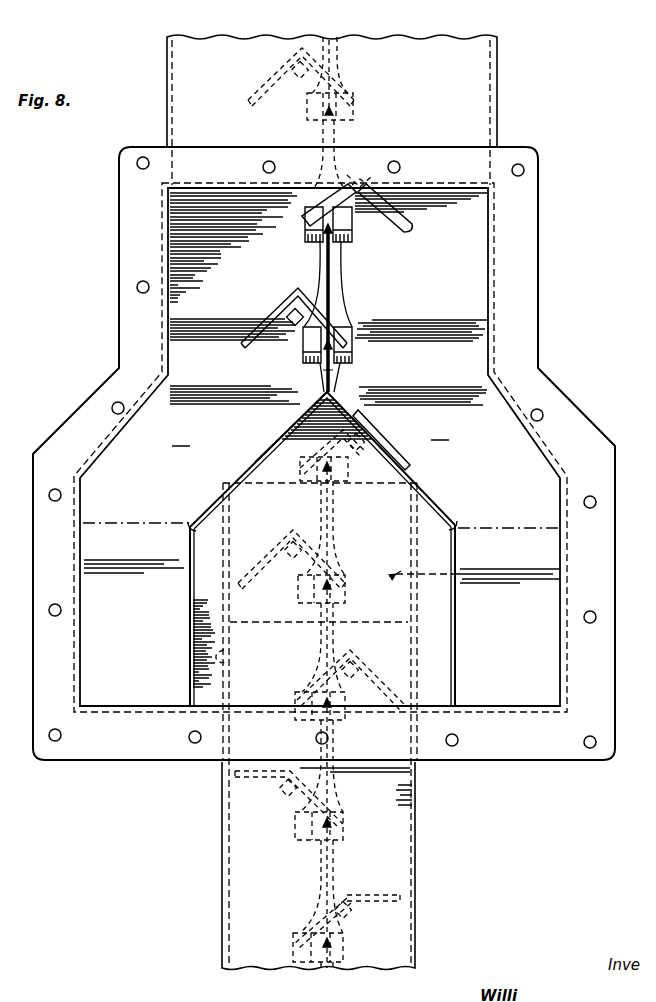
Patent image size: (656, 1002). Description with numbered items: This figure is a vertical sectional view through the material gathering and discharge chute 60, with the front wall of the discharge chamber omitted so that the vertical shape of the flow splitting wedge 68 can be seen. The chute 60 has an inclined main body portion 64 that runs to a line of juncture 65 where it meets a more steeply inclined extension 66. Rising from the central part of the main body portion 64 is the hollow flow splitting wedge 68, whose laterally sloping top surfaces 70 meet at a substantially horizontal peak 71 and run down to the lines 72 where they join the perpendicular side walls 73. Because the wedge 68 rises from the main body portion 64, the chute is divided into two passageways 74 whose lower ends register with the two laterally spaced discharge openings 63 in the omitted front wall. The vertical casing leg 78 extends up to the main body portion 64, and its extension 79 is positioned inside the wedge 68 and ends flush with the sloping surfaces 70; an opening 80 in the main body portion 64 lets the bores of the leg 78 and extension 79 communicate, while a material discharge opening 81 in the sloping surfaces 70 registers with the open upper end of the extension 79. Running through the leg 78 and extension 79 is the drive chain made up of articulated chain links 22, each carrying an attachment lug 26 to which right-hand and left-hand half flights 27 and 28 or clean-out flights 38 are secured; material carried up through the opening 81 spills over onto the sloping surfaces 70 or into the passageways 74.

The chain link 22 is at (320, 158).
The attachment lug 26 is at (306, 85).
The right-hand half flight 27 is at (406, 228).
The left-hand half flight 28 is at (268, 88).
The clean-out flight 38 is at (268, 782).
The material gathering and discharge chute 60 is at (175, 372).
The discharge opening 63 is at (126, 524).
The main body portion 64 is at (227, 363).
The line of juncture 65 is at (308, 315).
The extension 66 is at (462, 255).
The flow splitting wedge 68 is at (276, 433).
The laterally sloping top surface 70 is at (258, 458).
The peak 71 is at (331, 385).
The line 72 is at (190, 524).
The side wall 73 is at (190, 645).
The passageway 74 is at (312, 435).
The vertical casing leg 78 is at (220, 870).
The extension of vertical leg 79 is at (226, 660).
The opening 80 is at (458, 586).
The material discharge opening 81 is at (392, 620).